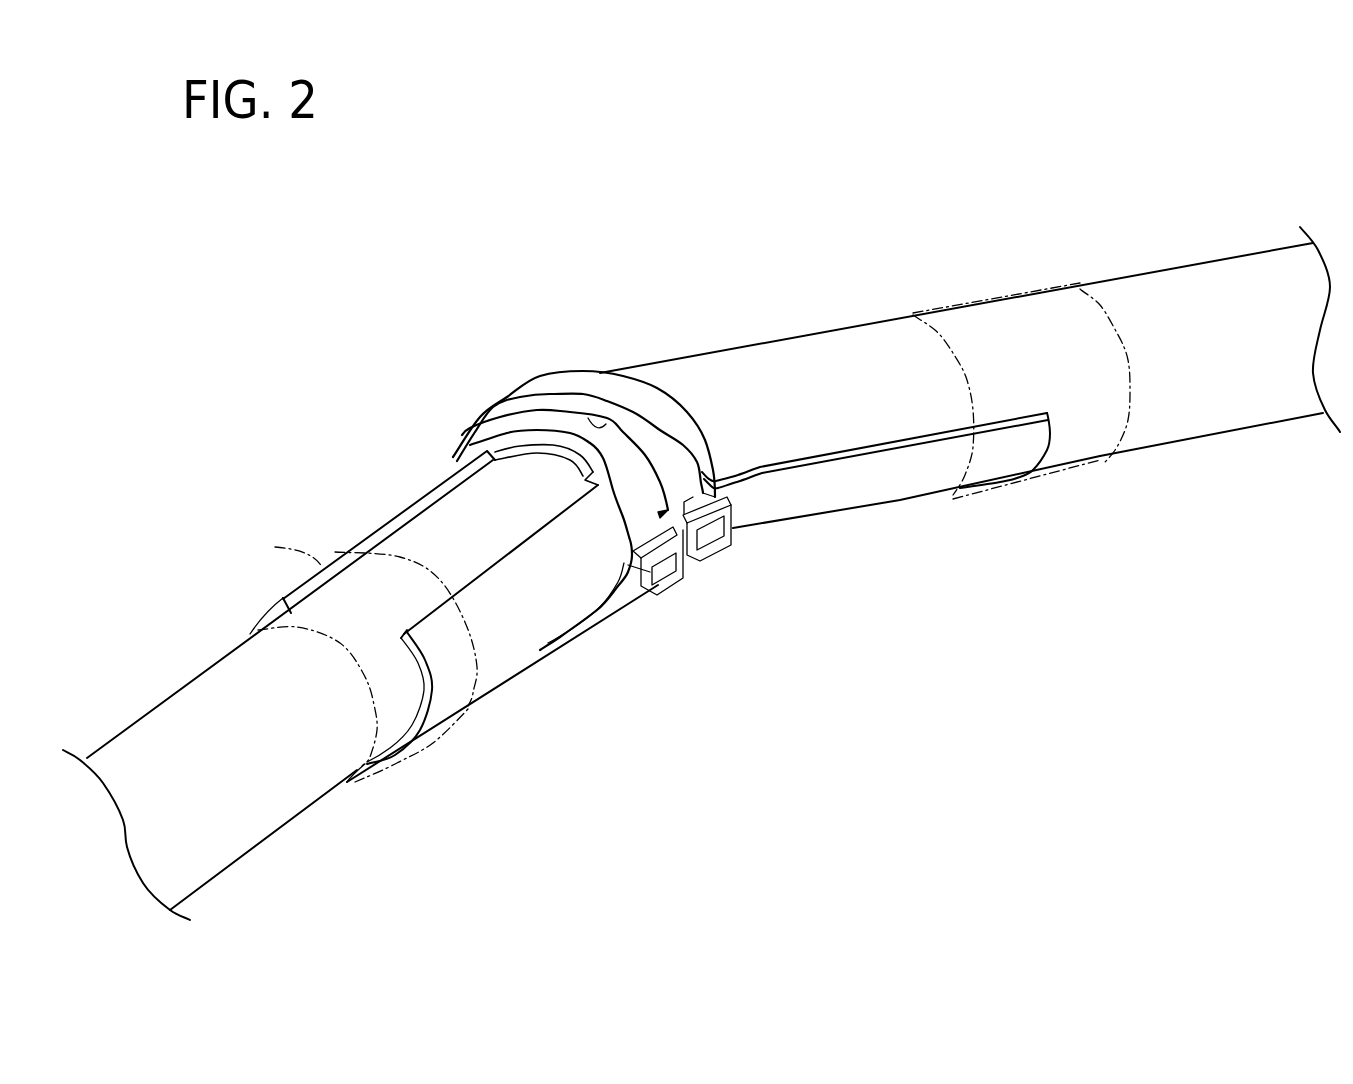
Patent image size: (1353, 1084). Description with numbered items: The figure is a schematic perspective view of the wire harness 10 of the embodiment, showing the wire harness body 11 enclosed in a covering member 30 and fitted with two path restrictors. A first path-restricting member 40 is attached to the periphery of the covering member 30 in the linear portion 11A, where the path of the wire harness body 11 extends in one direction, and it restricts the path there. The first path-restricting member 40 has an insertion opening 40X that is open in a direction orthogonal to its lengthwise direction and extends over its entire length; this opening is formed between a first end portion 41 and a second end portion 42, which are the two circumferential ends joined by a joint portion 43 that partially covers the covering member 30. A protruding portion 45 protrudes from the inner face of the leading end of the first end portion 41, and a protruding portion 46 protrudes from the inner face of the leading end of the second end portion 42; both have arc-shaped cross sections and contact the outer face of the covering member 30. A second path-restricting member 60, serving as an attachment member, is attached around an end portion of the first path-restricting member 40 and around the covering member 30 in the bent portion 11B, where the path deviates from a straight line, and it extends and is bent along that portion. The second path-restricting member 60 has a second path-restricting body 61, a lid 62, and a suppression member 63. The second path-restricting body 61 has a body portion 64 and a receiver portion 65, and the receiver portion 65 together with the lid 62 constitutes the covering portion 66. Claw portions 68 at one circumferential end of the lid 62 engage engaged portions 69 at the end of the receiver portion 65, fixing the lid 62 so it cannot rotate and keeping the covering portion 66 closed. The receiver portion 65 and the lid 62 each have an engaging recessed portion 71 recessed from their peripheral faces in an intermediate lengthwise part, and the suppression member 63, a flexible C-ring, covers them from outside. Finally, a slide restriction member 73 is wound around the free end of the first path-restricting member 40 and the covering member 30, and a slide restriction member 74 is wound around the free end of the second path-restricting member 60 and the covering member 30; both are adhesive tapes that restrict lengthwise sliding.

The wire harness 10 is at (1258, 162).
The wire harness body 11 is at (210, 835).
The linear portion 11A is at (427, 528).
The bent portion 11B is at (772, 353).
The covering member 30 is at (210, 768).
The first path-restricting member 40 is at (550, 647).
The insertion opening 40X is at (495, 555).
The first end portion 41 is at (375, 537).
The second end portion 42 is at (403, 630).
The joint portion 43 is at (472, 696).
The protruding portion 45 is at (283, 607).
The protruding portion 46 is at (393, 647).
The second path-restricting member 60 is at (873, 508).
The second path-restricting body 61 is at (807, 519).
The lid 62 is at (697, 440).
The suppression member 63 is at (627, 408).
The body portion 64 is at (837, 470).
The receiver portion 65 is at (627, 603).
The covering portion 66 is at (600, 367).
The claw portions 68 is at (663, 579).
The engaged portions 69 is at (685, 547).
The engaging recessed portion 71 is at (585, 424).
The slide restriction member 73 is at (275, 547).
The slide restriction member 74 is at (1040, 280).